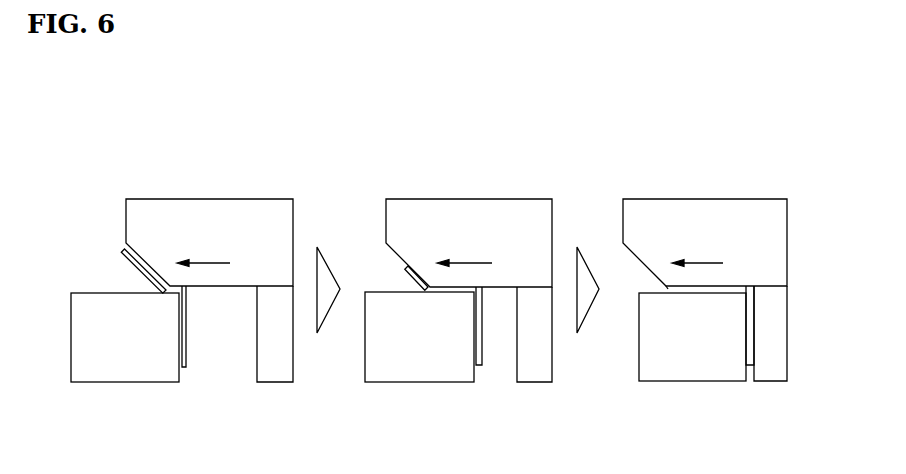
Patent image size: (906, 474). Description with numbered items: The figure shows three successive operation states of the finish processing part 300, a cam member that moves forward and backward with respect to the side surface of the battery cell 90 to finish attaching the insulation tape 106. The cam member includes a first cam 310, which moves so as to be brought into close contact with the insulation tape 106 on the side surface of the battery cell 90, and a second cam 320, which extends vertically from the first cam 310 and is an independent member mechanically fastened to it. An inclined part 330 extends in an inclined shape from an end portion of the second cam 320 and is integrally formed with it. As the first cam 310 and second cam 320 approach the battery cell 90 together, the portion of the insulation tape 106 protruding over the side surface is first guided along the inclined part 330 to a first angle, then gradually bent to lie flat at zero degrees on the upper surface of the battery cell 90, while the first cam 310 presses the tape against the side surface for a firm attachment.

The finish processing part 300 is at (103, 98).
The second cam 320 is at (250, 212).
The inclined part 330 is at (115, 253).
The battery cell 90 is at (126, 372).
The insulation tape 106 is at (187, 346).
The first cam 310 is at (273, 372).